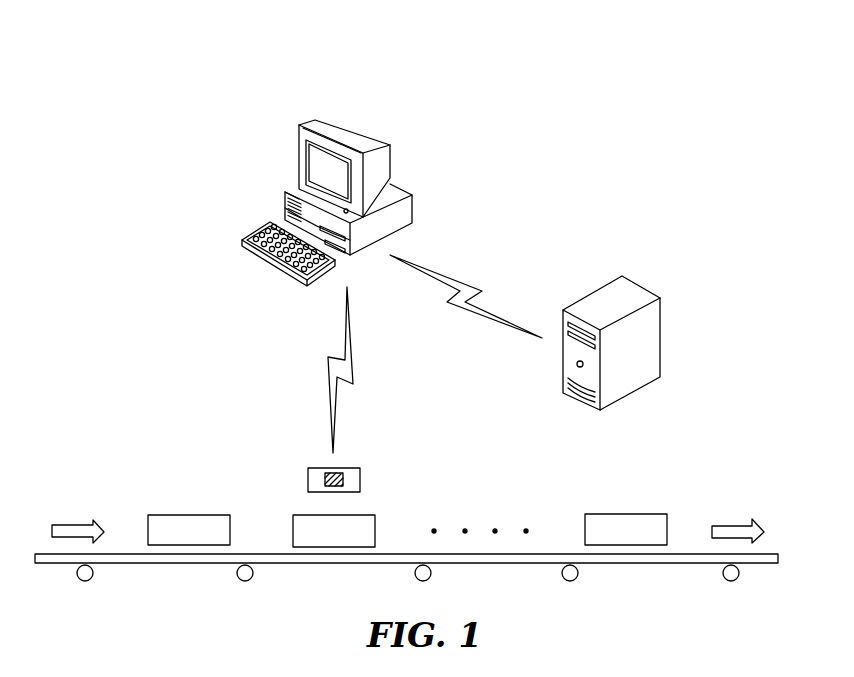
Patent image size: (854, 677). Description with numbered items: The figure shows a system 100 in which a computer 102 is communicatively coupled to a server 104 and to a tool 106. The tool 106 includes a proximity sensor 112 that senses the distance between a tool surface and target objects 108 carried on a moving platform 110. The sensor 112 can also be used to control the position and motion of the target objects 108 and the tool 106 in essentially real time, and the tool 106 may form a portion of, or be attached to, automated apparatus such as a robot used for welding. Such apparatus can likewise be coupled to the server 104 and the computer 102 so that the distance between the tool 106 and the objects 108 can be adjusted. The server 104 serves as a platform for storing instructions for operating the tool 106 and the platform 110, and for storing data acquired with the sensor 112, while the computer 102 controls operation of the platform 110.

The system 100 is at (151, 124).
The computer 102 is at (393, 167).
The server 104 is at (662, 336).
The tool 106 is at (362, 481).
The target objects 108 is at (191, 515).
The moving platform 110 is at (497, 565).
The proximity sensor 112 is at (331, 473).